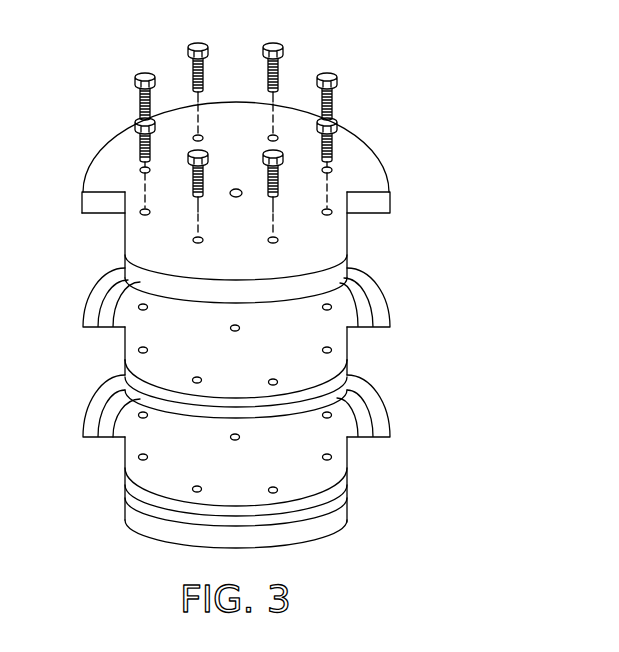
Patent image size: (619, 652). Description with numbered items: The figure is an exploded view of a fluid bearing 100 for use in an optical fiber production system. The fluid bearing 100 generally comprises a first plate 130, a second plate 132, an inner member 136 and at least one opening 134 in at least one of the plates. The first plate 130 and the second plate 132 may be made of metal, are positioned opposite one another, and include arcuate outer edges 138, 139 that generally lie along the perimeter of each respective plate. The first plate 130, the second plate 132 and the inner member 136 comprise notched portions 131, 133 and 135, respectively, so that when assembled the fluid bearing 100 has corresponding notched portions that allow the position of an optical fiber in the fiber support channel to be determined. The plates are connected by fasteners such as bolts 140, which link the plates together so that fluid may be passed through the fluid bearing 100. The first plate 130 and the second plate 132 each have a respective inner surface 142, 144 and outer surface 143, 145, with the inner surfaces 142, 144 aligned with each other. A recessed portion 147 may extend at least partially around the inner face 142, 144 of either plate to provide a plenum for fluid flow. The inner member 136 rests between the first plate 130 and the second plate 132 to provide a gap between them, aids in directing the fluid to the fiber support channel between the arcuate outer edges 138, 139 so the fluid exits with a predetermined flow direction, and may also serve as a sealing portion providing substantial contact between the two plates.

The fluid bearing 100 is at (306, 314).
The first plate 130 is at (252, 189).
The notched portion 131 is at (97, 192).
The second plate 132 is at (257, 477).
The notched portion 133 is at (103, 438).
The opening 134 is at (236, 188).
The notched portion 135 is at (88, 329).
The inner member 136 is at (275, 326).
The arcuate outer edge 138 is at (272, 292).
The arcuate outer edge 139 is at (148, 518).
The bolts 140 is at (290, 56).
The inner surface 142 is at (97, 216).
The outer surface 143 is at (107, 157).
The inner surface 144 is at (230, 428).
The outer surface 145 is at (261, 516).
The recessed portion 147 is at (110, 418).